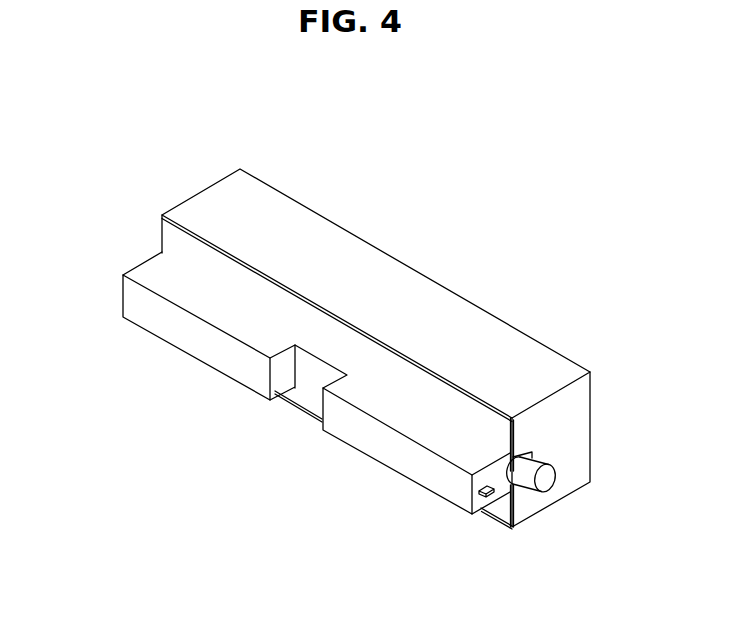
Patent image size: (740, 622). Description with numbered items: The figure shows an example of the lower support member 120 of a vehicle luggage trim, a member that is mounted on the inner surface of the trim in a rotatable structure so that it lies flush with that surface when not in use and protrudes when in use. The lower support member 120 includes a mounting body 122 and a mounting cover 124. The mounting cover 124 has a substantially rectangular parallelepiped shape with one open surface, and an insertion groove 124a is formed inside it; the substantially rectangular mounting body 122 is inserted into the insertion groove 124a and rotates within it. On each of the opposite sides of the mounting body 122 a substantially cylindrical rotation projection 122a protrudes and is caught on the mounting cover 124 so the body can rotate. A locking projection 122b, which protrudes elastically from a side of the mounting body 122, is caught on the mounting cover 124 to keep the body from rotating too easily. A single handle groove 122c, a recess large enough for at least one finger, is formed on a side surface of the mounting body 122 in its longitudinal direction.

The lower support member 120 is at (358, 189).
The mounting body 122 is at (203, 349).
The rotation projection 122a is at (543, 483).
The locking projection 122b is at (489, 493).
The handle groove 122c is at (312, 393).
The mounting cover 124 is at (458, 325).
The insertion groove 124a is at (222, 267).